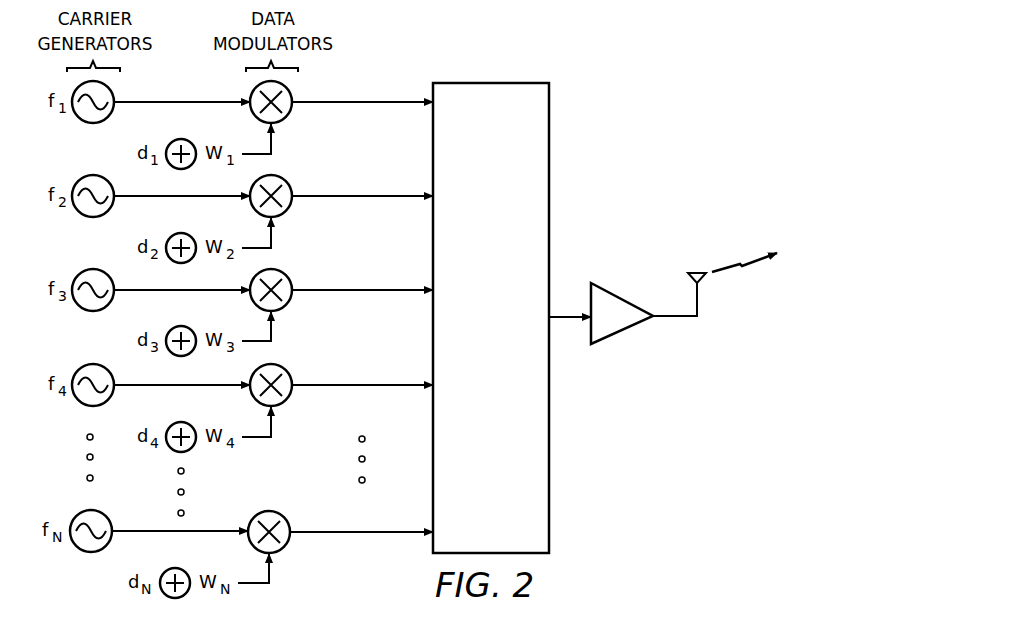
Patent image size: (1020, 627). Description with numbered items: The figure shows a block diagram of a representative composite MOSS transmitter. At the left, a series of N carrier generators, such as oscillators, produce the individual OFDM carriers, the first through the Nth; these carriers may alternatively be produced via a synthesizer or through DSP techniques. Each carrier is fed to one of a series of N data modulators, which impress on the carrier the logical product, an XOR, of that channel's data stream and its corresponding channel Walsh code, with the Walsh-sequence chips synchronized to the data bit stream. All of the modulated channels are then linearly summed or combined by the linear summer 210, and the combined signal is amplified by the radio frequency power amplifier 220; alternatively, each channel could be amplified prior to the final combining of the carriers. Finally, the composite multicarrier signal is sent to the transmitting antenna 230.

The linear summer 210 is at (549, 158).
The radio frequency power amplifier 220 is at (622, 334).
The transmitting antenna 230 is at (704, 283).